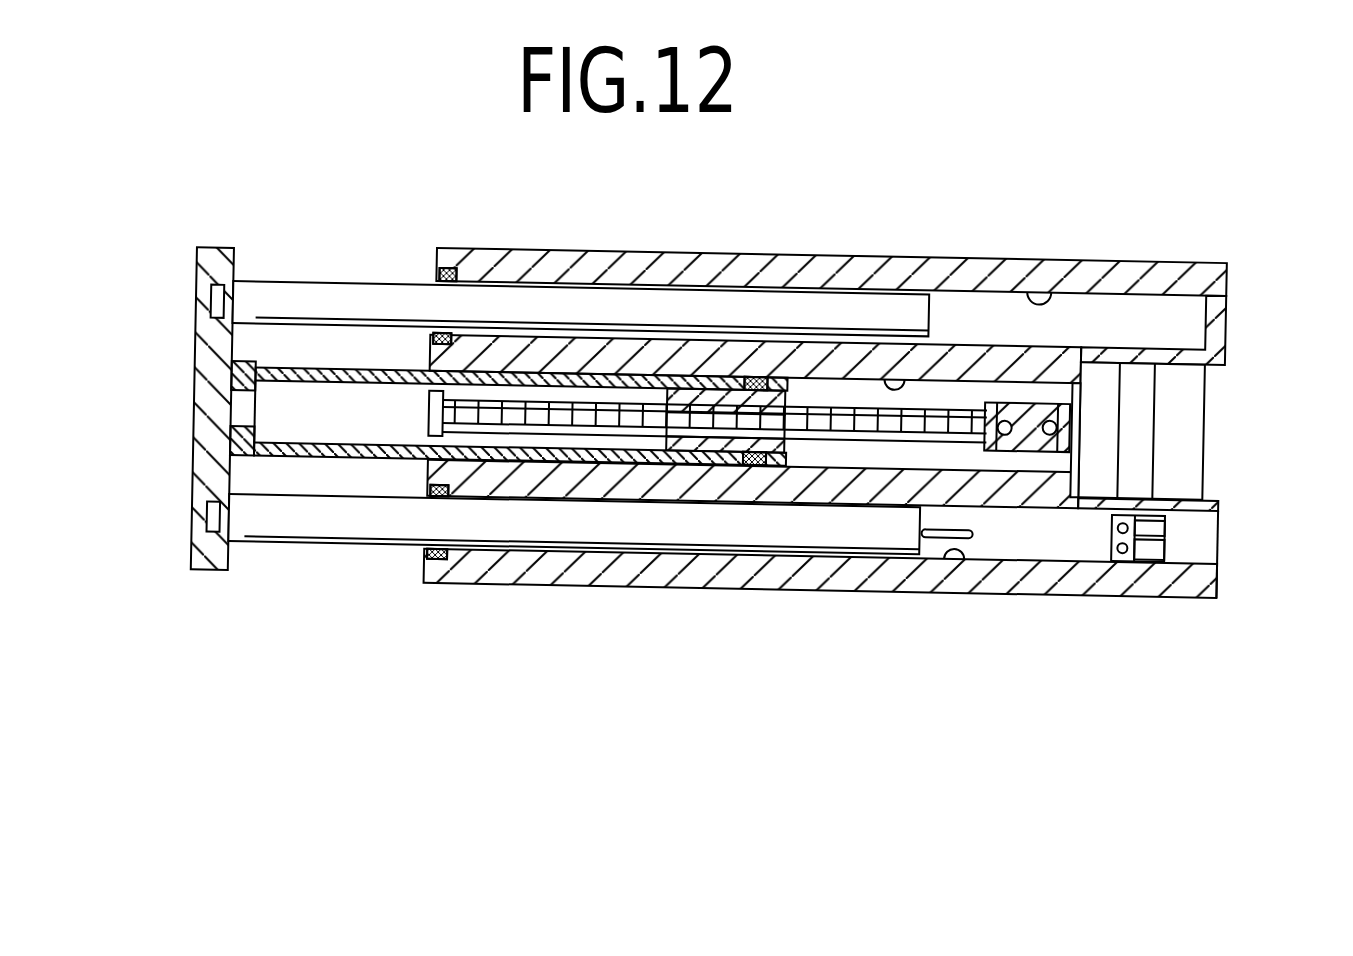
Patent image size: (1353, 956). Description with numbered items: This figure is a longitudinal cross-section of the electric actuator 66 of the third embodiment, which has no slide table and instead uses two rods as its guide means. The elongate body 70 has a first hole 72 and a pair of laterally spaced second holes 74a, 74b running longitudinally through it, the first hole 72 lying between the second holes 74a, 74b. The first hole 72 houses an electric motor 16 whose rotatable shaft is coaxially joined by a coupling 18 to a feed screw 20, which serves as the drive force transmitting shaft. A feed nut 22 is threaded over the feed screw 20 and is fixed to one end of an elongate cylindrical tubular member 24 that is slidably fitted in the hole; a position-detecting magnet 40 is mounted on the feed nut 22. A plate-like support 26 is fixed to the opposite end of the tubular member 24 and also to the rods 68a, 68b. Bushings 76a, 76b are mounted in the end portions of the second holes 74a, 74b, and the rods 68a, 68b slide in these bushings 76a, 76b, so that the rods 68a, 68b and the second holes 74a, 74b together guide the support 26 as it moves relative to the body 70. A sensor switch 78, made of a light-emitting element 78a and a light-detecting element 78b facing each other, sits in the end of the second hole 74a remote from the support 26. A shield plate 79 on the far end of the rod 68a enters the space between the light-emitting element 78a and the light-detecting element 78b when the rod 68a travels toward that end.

The electric motor 16 is at (1183, 442).
The coupling 18 is at (1022, 452).
The feed screw 20 is at (853, 437).
The feed nut 22 is at (787, 452).
The tubular member 24 is at (376, 460).
The support 26 is at (197, 395).
The position-detecting magnet 40 is at (757, 462).
The electric actuator 66 is at (1122, 198).
The rod 68a is at (275, 520).
The rod 68b is at (337, 288).
The body 70 is at (1095, 587).
The first hole 72 is at (895, 380).
The second hole 74a is at (962, 565).
The second hole 74b is at (1040, 296).
The bushing 76a is at (577, 557).
The bushing 76b is at (565, 287).
The sensor switch 78 is at (1137, 560).
The light-emitting element 78a is at (1170, 523).
The light-detecting element 78b is at (1170, 552).
The shield plate 79 is at (935, 540).